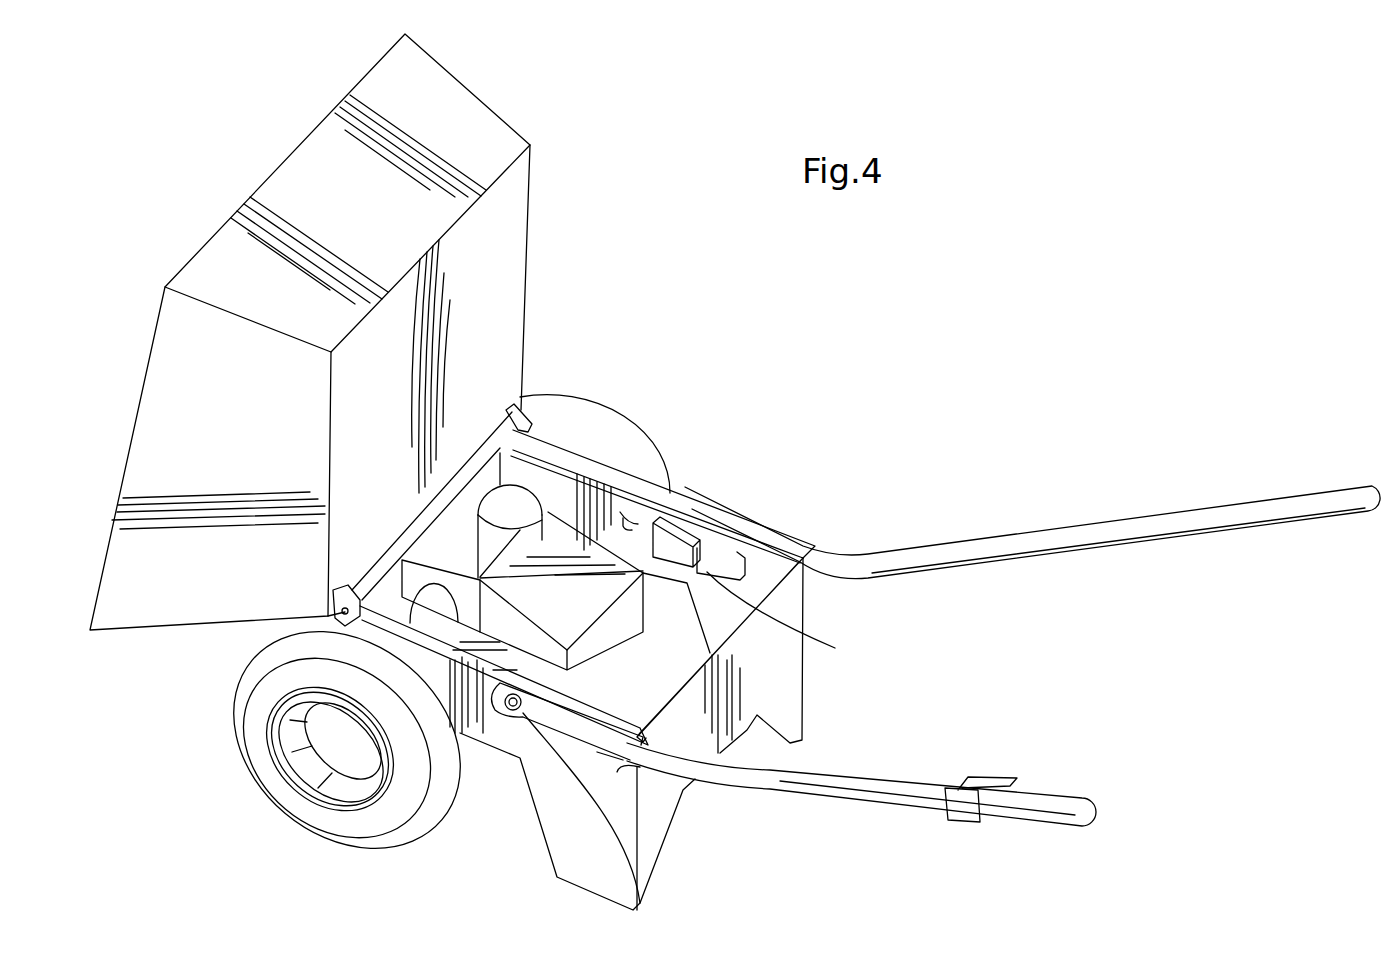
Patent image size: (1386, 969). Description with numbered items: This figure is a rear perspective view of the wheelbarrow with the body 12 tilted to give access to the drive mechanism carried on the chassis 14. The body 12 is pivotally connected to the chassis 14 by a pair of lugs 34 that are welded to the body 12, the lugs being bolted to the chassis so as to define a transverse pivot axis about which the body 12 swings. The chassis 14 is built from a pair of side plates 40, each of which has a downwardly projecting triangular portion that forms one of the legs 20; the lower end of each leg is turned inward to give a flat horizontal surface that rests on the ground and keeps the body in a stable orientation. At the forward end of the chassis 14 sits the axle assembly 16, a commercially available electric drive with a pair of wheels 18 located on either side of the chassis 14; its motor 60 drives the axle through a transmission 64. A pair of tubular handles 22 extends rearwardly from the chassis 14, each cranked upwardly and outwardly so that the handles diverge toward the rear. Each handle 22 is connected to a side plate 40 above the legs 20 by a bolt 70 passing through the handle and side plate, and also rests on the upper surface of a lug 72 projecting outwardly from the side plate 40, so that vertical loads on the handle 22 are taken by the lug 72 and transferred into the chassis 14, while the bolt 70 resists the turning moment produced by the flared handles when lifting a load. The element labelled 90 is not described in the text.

The body 12 is at (528, 240).
The chassis 14 is at (486, 718).
The axle assembly 16 is at (520, 533).
The wheels 18 is at (338, 827).
The legs 20 is at (578, 837).
The handles 22 is at (960, 567).
The lugs 34 is at (333, 622).
The side plates 40 is at (624, 517).
The motor 60 is at (498, 508).
The transmission 64 is at (458, 599).
The bolt 70 is at (523, 713).
The lug 72 is at (695, 783).
The deck 90 is at (710, 570).